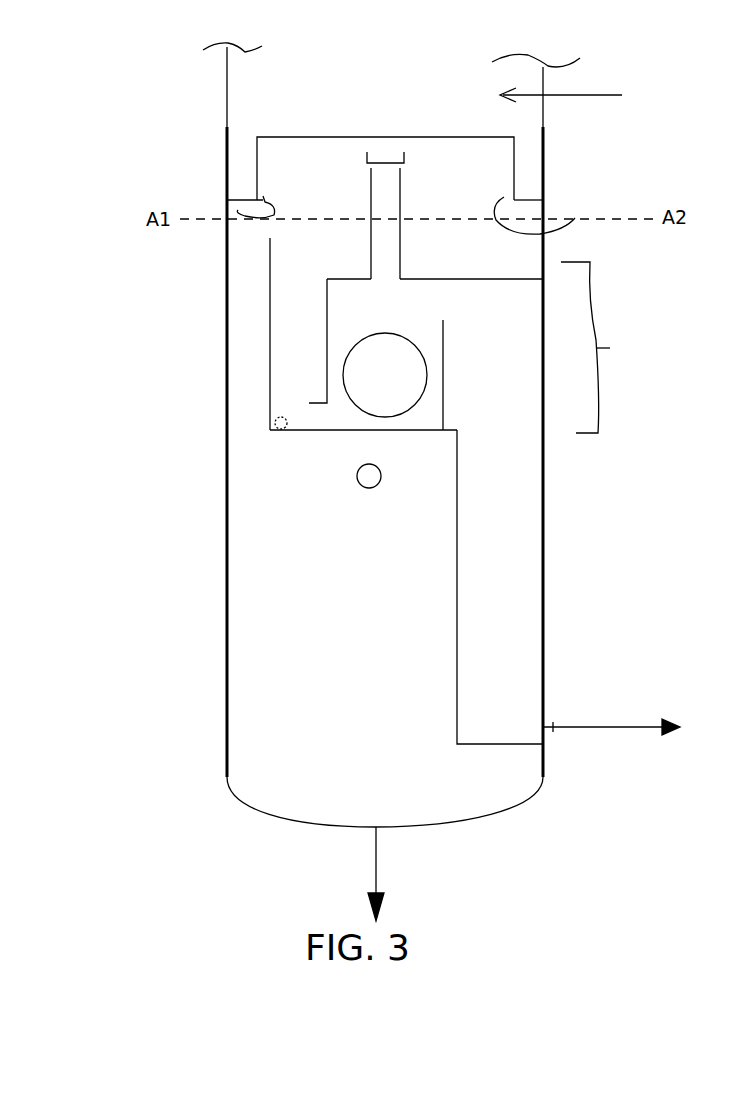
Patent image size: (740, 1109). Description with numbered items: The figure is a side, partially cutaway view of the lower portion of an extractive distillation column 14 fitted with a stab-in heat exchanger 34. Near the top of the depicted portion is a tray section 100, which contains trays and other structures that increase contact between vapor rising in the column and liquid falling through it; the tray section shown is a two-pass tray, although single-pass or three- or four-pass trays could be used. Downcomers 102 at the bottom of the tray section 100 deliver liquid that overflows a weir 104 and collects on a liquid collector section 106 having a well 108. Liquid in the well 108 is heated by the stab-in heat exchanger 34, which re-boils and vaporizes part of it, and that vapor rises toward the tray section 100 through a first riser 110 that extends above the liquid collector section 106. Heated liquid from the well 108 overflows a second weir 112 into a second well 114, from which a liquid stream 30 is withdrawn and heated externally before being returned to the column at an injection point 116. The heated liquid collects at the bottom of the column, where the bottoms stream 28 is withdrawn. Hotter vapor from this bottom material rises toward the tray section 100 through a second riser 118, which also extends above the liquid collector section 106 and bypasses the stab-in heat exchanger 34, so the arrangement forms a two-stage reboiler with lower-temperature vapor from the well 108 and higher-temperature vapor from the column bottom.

The extractive distillation column 14 is at (227, 287).
The bottoms stream 28 is at (376, 863).
The liquid stream 30 is at (576, 727).
The stab-in heat exchanger 34 is at (367, 338).
The tray section 100 is at (580, 95).
The downcomers 102 is at (242, 150).
The weir 104 is at (240, 218).
The liquid collector section 106 is at (551, 347).
The well 108 is at (294, 375).
The first riser 110 is at (398, 233).
The second weir 112 is at (445, 383).
The second well 114 is at (508, 540).
The injection point 116 is at (358, 474).
The second riser 118 is at (240, 306).